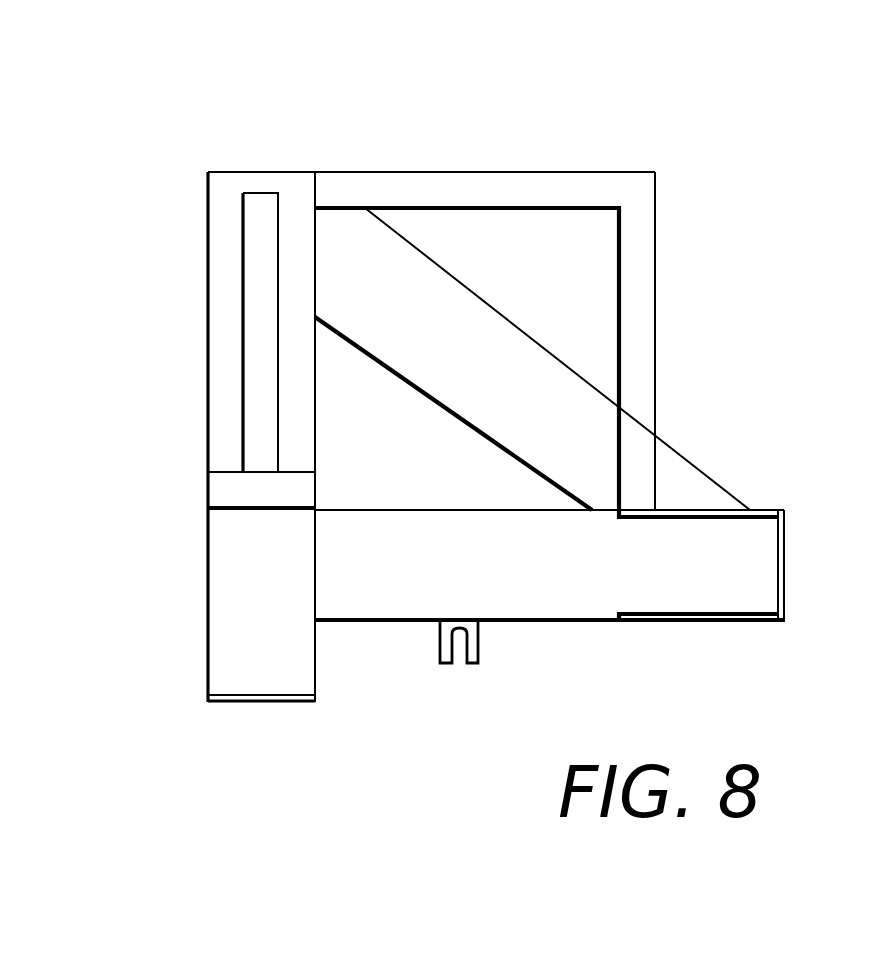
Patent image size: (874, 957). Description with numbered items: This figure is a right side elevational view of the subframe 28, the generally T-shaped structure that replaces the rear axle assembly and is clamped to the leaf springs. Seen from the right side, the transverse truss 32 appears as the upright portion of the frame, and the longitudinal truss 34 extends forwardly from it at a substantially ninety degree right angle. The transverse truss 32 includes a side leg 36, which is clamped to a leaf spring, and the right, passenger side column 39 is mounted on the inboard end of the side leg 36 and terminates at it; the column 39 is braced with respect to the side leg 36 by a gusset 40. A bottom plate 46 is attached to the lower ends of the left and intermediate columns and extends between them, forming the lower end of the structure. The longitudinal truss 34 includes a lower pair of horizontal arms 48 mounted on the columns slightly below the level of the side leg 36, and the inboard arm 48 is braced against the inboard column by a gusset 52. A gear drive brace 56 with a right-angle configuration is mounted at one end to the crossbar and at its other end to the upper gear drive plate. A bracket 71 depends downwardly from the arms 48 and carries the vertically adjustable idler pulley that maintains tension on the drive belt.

The subframe 28 is at (158, 117).
The transverse truss 32 is at (208, 170).
The longitudinal truss 34 is at (783, 511).
The side leg 36 is at (207, 462).
The second column 39 is at (207, 291).
The gusset 40 is at (280, 406).
The bottom plate 46 is at (260, 703).
The horizontal arm 48 is at (520, 577).
The gusset 52 is at (518, 391).
The gear drive brace 56 is at (655, 172).
The bracket 71 is at (478, 660).